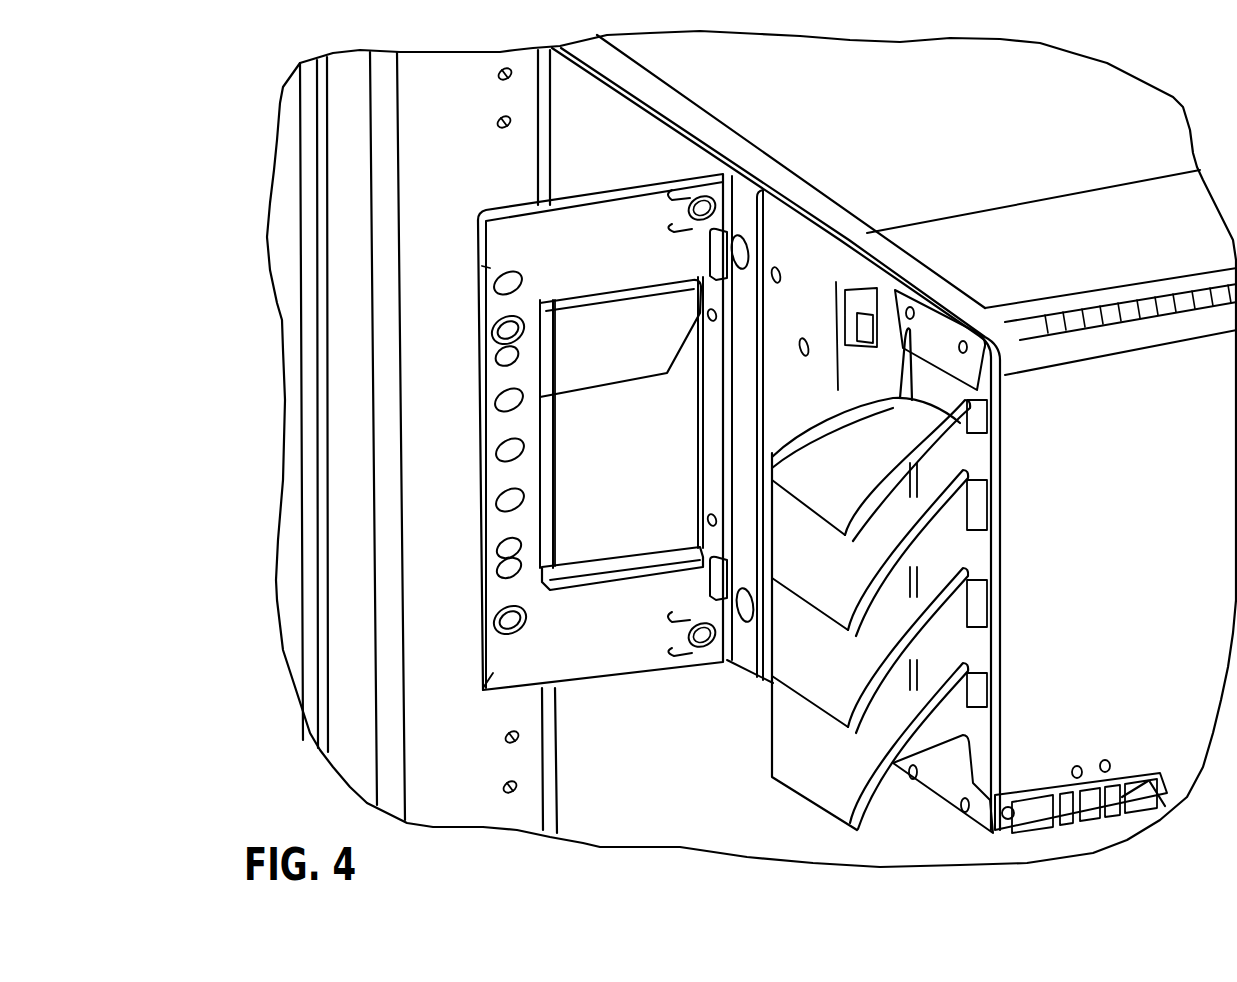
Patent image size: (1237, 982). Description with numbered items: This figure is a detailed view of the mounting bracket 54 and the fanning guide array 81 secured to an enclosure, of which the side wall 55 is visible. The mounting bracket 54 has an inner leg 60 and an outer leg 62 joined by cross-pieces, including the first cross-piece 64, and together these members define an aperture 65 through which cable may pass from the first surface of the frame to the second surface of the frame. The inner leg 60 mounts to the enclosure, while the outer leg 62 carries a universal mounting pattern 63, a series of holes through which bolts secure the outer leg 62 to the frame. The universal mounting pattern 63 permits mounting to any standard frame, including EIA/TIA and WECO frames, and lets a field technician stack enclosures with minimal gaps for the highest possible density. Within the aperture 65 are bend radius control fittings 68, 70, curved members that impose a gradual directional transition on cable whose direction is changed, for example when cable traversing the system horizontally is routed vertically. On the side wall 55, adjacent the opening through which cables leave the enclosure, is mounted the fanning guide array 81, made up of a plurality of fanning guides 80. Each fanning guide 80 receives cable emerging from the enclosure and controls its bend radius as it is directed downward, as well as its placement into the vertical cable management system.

The mounting bracket 54 is at (470, 193).
The side wall 55 is at (812, 262).
The inner leg 60 is at (713, 537).
The outer leg 62 is at (492, 674).
The universal mounting pattern 63 is at (483, 628).
The first cross-piece 64 is at (617, 228).
The aperture 65 is at (597, 478).
The bend radius control fitting 68 is at (577, 355).
The bend radius control fitting 70 is at (623, 560).
The fanning guide 80 is at (830, 770).
The fanning guide array 81 is at (745, 740).